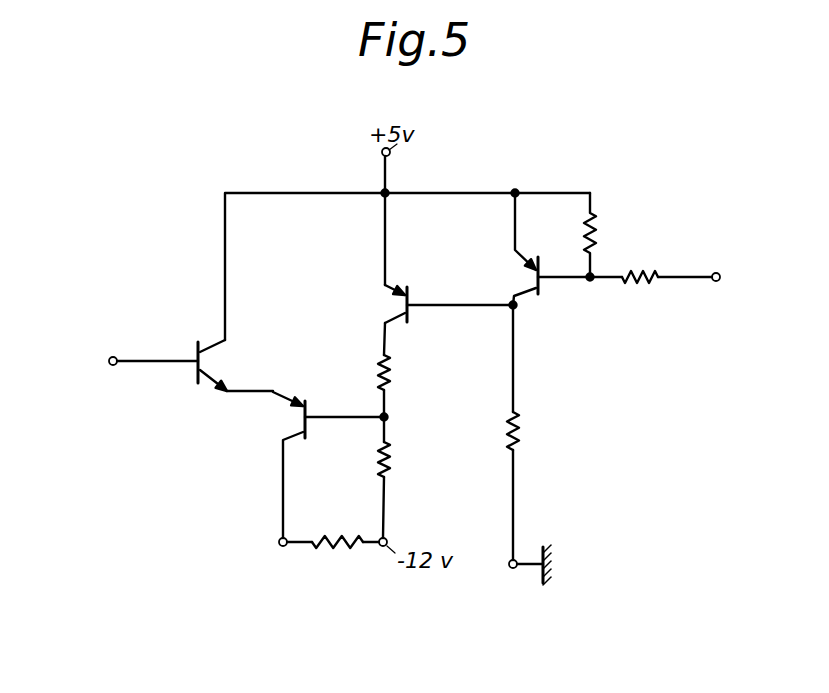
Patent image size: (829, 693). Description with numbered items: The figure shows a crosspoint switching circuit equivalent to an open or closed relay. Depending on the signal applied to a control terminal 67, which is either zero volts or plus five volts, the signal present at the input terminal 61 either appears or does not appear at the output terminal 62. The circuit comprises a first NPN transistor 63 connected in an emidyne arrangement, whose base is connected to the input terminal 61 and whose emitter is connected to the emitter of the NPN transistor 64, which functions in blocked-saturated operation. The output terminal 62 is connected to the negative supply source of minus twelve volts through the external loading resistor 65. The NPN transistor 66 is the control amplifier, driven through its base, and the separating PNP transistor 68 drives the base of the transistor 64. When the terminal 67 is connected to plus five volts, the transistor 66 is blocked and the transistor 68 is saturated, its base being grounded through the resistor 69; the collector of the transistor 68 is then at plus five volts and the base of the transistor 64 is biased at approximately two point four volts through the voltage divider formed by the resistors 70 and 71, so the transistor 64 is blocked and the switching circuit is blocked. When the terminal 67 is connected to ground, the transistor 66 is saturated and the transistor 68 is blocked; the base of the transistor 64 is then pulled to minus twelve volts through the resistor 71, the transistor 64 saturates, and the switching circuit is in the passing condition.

The input terminal 61 is at (122, 350).
The output terminal 62 is at (279, 548).
The first NPN transistor 63 is at (235, 365).
The NPN transistor 64 is at (303, 419).
The external loading resistor 65 is at (340, 549).
The NPN transistor (control amplifier) 66 is at (534, 276).
The control terminal 67 is at (735, 262).
The separating PNP transistor 68 is at (404, 304).
The resistor 69 is at (520, 432).
The voltage divider resistor 70 is at (391, 374).
The voltage divider resistor 71 is at (391, 456).